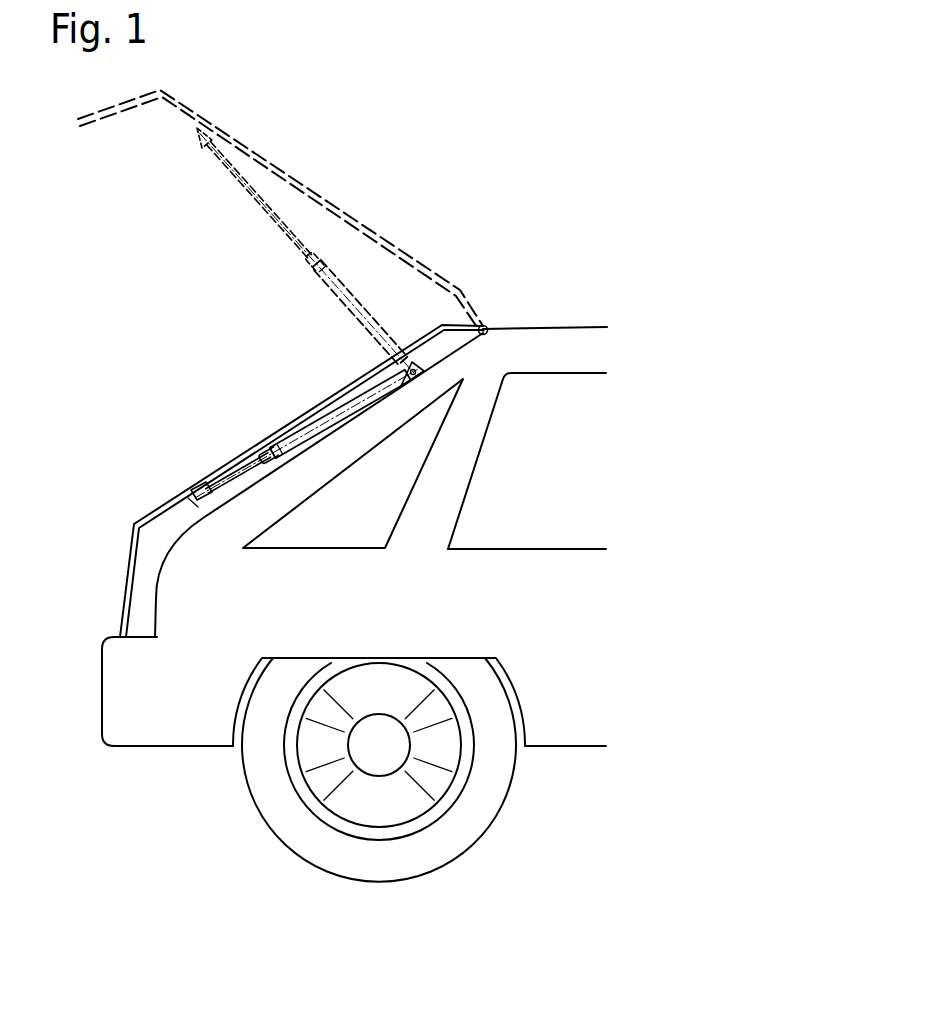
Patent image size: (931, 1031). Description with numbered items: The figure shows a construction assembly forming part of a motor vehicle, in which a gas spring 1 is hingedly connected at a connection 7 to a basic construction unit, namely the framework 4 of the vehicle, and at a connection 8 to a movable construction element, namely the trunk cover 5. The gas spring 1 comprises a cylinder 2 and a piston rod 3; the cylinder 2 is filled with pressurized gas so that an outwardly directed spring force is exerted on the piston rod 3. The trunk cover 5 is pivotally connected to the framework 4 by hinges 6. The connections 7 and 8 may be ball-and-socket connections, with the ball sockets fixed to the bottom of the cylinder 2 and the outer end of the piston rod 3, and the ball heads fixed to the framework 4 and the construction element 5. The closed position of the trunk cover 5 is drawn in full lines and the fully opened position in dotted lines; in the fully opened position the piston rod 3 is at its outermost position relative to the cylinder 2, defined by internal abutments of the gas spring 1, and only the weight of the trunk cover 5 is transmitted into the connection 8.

The gas spring 1 is at (357, 375).
The cylinder 2 is at (327, 422).
The piston rod 3 is at (230, 465).
The framework 4 is at (122, 696).
The construction element 5 is at (129, 562).
The hinges 6 is at (490, 324).
The hinged connection 7 is at (417, 362).
The hinged connection 8 is at (203, 507).